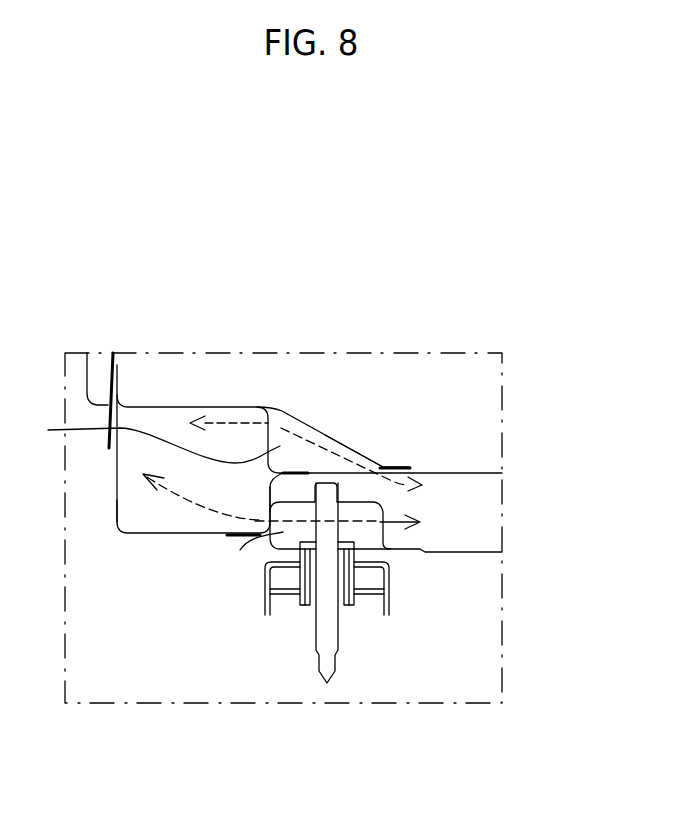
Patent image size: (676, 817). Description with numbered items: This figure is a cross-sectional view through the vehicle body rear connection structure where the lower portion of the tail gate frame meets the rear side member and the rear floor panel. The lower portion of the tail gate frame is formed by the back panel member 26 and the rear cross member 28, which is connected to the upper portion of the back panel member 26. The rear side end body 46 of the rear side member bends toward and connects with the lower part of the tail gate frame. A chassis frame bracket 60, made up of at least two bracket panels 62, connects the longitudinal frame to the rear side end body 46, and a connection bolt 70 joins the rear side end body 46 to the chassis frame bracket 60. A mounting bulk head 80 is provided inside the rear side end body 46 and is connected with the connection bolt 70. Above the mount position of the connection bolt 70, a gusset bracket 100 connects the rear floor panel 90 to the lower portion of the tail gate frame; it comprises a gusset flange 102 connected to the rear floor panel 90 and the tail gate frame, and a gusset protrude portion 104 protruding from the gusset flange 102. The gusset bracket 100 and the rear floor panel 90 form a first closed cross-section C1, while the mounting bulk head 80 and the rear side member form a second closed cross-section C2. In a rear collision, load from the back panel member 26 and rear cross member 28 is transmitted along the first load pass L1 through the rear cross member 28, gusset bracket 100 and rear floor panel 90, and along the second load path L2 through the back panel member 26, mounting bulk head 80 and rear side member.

The rear cross member 28 is at (155, 406).
The gusset flange 102 is at (240, 406).
The gusset protrude portion 104 is at (353, 447).
The first load pass L1 is at (278, 427).
The gusset bracket 100 is at (315, 412).
The first closed cross-section C1 is at (151, 440).
The rear floor panel 90 is at (488, 472).
The mounting bulk head 80 is at (387, 539).
The rear side end body 46 is at (460, 552).
The back panel member 26 is at (142, 537).
The second load path L2 is at (195, 502).
The second closed cross-section C2 is at (240, 550).
The chassis frame bracket 60 is at (341, 627).
The bracket panels 62 is at (282, 566).
The connection bolt 70 is at (328, 685).